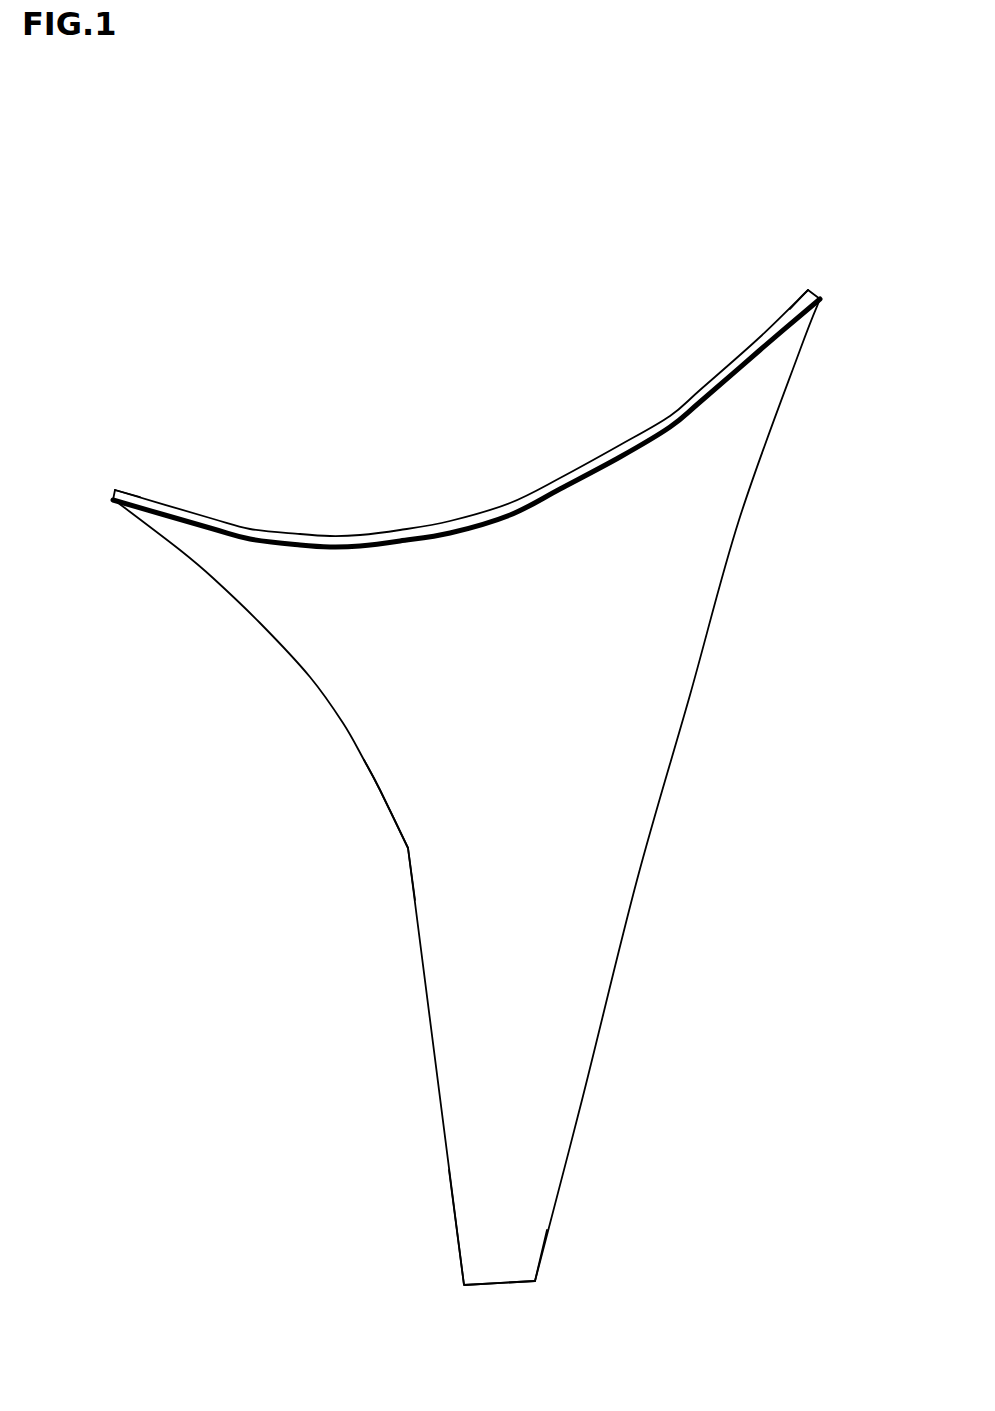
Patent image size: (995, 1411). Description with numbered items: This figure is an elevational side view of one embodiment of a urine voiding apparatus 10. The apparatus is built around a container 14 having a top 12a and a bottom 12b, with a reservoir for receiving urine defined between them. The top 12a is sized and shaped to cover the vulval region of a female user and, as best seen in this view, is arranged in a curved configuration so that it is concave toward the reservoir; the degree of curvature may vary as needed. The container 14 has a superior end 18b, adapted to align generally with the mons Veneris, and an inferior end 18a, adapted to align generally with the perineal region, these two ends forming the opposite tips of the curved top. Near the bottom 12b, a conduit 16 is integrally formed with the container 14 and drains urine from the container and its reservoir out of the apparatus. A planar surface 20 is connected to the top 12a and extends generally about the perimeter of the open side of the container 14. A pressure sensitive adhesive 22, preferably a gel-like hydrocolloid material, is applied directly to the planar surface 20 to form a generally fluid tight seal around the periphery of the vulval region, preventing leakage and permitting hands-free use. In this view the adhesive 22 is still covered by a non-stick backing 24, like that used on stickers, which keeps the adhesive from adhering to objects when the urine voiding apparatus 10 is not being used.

The urine voiding apparatus 10 is at (771, 740).
The top portion 12a is at (212, 580).
The bottom portion 12b is at (613, 977).
The container 14 is at (380, 790).
The conduit 16 is at (455, 1213).
The inferior end 18a is at (795, 302).
The superior end 18b is at (150, 500).
The planar surface 20 is at (472, 397).
The pressure sensitive adhesive 22 is at (568, 487).
The non-stick backing 24 is at (695, 397).